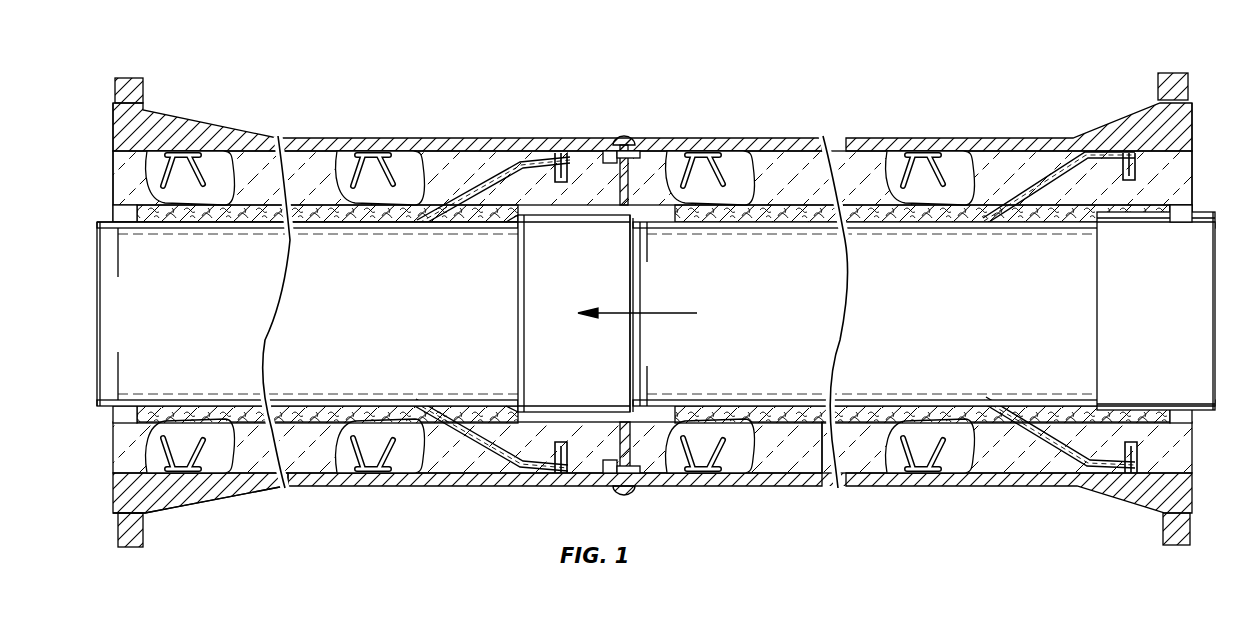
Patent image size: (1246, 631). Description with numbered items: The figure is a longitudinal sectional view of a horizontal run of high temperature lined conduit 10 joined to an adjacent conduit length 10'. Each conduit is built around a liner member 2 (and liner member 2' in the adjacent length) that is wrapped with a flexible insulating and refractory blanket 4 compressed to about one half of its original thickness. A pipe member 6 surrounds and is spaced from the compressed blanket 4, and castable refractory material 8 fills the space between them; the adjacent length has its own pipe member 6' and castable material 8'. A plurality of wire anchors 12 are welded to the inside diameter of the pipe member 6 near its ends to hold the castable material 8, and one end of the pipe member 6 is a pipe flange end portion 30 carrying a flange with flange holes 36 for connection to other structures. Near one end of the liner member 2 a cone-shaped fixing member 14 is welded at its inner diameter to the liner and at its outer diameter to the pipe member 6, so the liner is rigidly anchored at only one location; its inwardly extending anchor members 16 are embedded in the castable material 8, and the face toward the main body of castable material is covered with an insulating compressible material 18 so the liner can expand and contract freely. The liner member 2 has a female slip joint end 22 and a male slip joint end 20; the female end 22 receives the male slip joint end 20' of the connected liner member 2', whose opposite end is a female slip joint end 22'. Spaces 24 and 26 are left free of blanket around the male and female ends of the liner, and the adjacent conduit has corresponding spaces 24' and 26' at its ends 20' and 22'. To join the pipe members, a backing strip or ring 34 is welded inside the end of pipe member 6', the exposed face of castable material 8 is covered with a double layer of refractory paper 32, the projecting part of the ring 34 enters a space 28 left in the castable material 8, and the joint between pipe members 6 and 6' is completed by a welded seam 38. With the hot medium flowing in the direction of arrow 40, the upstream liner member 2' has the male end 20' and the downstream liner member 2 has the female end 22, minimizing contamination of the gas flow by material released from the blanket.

The high temperature lined conduit 10 is at (467, 130).
The adjacent conduit length 10' is at (1019, 137).
The liner member 2 is at (467, 409).
The connected liner member 2' is at (1007, 412).
The flexible insulating and refractory blanket 4 is at (388, 229).
The pipe member 6 is at (555, 498).
The pipe member of adjacent conduit 6' is at (1019, 509).
The castable refractory material 8 is at (214, 498).
The castable material of adjacent conduit 8' is at (816, 499).
The wire anchors 12 is at (215, 152).
The fixing member 14 is at (475, 424).
The anchor members 16 is at (552, 457).
The insulating compressible material 18 is at (497, 462).
The male slip joint end 20 is at (307, 314).
The male slip joint end of connected liner 20' is at (924, 315).
The female slip joint end 22 is at (568, 313).
The female slip joint end of adjacent liner 22' is at (1156, 311).
The space 24 is at (315, 314).
The space of adjacent conduit 24' is at (918, 265).
The space 26 is at (608, 160).
The space of adjacent conduit 26' is at (1202, 188).
The space in castable material 28 is at (624, 135).
The pipe flange end portion 30 is at (163, 492).
The refractory paper 32 is at (618, 422).
The backing strip or ring 34 is at (650, 468).
The flange holes 36 is at (140, 533).
The welded seam 38 is at (625, 492).
The arrow 40 is at (652, 312).